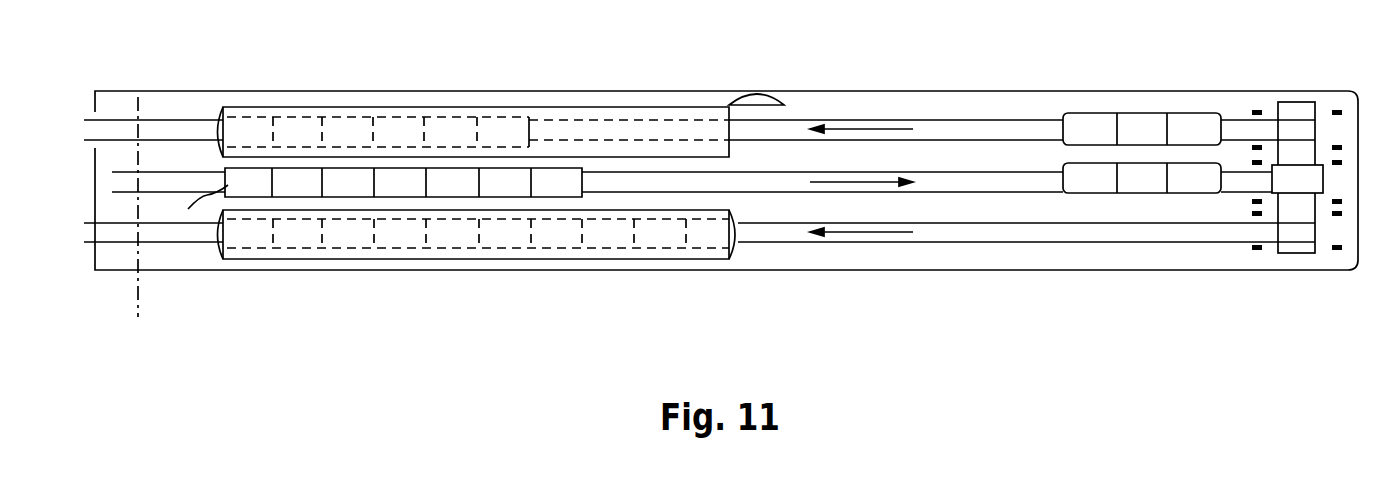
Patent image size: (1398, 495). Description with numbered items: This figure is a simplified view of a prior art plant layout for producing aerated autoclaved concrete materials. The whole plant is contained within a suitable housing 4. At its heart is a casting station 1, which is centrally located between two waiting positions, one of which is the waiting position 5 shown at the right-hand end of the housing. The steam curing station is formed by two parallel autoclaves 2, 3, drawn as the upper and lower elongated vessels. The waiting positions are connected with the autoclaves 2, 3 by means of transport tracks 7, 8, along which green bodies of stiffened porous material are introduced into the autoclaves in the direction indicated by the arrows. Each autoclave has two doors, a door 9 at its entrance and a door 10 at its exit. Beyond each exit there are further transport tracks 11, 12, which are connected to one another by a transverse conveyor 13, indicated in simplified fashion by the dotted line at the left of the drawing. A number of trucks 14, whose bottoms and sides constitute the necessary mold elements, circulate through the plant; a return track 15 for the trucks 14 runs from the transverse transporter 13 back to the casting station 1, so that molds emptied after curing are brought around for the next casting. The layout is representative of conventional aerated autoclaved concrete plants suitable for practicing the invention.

The casting station 1 is at (1345, 180).
The autoclave 2 is at (675, 106).
The autoclave 3 is at (697, 259).
The housing 4 is at (877, 90).
The waiting position 5 is at (1343, 126).
The transport track 7 is at (947, 130).
The transport track 8 is at (970, 230).
The door 9 is at (757, 94).
The door 10 is at (214, 107).
The transport track 11 is at (171, 128).
The transport track 12 is at (173, 233).
The transverse conveyor 13 is at (140, 164).
The truck 14 is at (1088, 120).
The return track 15 is at (963, 178).